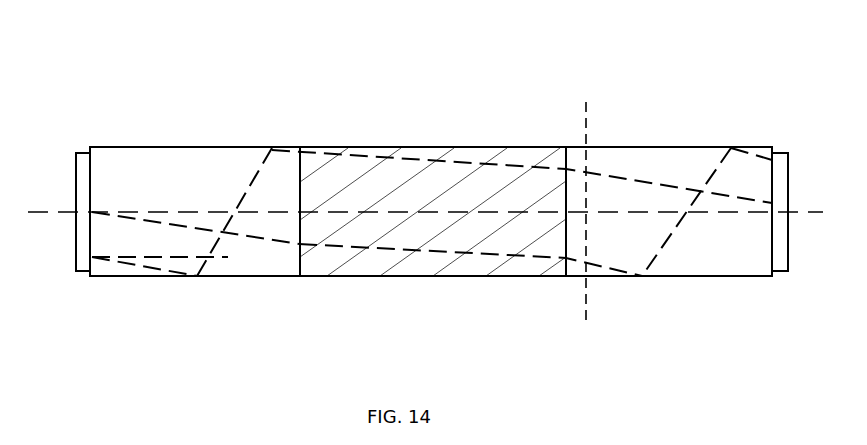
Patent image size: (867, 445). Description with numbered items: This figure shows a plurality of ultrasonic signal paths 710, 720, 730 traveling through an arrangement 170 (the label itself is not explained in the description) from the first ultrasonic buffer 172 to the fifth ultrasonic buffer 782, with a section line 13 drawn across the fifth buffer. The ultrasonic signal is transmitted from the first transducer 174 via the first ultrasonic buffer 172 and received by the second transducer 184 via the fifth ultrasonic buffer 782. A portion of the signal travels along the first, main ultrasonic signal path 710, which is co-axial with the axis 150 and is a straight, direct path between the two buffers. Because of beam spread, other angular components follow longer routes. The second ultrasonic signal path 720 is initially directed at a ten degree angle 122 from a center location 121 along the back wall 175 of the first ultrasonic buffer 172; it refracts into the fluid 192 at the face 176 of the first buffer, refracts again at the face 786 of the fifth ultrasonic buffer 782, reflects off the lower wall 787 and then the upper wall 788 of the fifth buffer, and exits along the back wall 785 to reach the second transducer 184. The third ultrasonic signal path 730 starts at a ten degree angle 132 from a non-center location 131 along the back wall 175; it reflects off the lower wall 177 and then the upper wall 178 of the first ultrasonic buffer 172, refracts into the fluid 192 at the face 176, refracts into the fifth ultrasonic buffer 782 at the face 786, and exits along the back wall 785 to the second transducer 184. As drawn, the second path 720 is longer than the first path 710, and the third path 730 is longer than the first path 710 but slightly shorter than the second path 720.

The optical assembly 170 is at (141, 72).
The axis 150 is at (815, 208).
The first transducer 174 is at (80, 188).
The back wall 175 is at (78, 150).
The back wall 785 is at (782, 152).
The second transducer 184 is at (779, 262).
The upper wall 178 is at (178, 148).
The first ultrasonic buffer 172 is at (255, 262).
The fluid 192 is at (312, 193).
The face 176 is at (310, 270).
The fifth ultrasonic buffer 782 is at (733, 262).
The upper wall 788 is at (645, 148).
The third ultrasonic signal path 730 is at (465, 162).
The first ultrasonic signal path 710 is at (350, 208).
The face 786 is at (543, 158).
The second ultrasonic signal path 720 is at (417, 252).
The center location 121 is at (96, 206).
The non-center location 131 is at (96, 254).
The angle 132 is at (172, 262).
The angle 122 is at (204, 227).
The lower wall 177 is at (213, 278).
The lower wall 787 is at (616, 276).
The section line 13- 13 is at (586, 102).